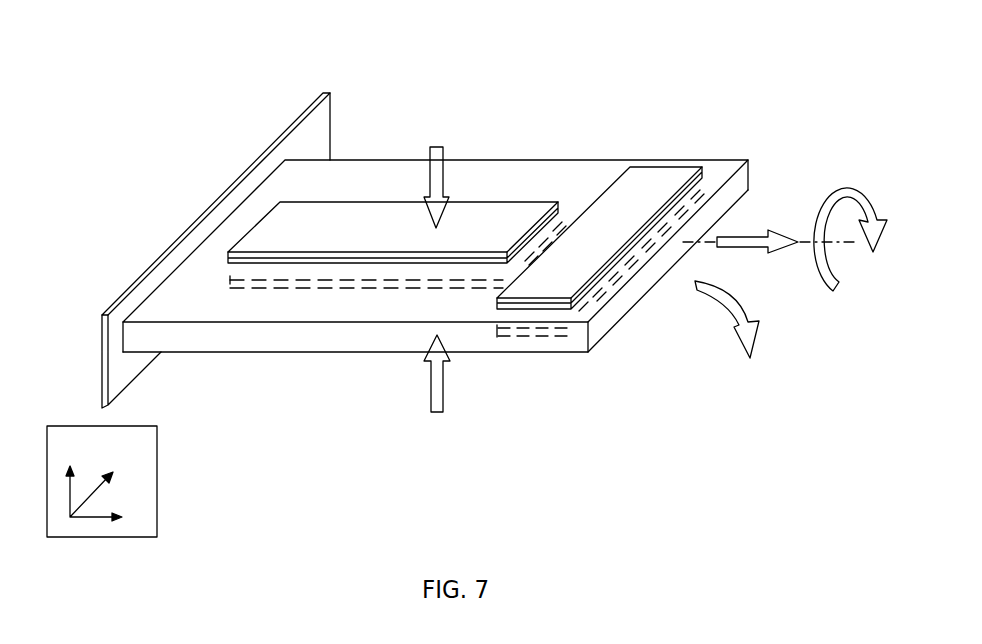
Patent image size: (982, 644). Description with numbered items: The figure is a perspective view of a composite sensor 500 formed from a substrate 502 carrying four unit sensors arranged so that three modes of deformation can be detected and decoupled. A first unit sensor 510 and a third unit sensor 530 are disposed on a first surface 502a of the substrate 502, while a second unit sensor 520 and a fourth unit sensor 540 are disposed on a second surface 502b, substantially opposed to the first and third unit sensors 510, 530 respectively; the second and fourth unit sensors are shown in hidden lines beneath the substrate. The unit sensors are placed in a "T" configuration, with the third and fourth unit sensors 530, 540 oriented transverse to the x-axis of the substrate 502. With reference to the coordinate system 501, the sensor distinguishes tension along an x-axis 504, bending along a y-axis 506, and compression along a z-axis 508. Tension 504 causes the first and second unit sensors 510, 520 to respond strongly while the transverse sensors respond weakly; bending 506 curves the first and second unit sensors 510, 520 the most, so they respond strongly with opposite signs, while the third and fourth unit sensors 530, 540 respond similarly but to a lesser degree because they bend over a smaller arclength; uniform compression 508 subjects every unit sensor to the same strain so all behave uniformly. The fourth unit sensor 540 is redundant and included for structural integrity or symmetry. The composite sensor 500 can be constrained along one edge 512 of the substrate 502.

The composite sensor 500 is at (720, 96).
The coordinate system 501 is at (92, 426).
The substrate 502 is at (553, 153).
The first surface 502a is at (718, 171).
The second surface 502b is at (335, 352).
The tension along an x-axis 504 is at (768, 253).
The bending along a y-axis 506 is at (758, 323).
The compression along a z-axis 508 is at (430, 156).
The first unit sensor 510 is at (290, 227).
The edge 512 is at (130, 288).
The second unit sensor 520 is at (278, 292).
The third unit sensor 530 is at (668, 182).
The fourth unit sensor 540 is at (605, 305).